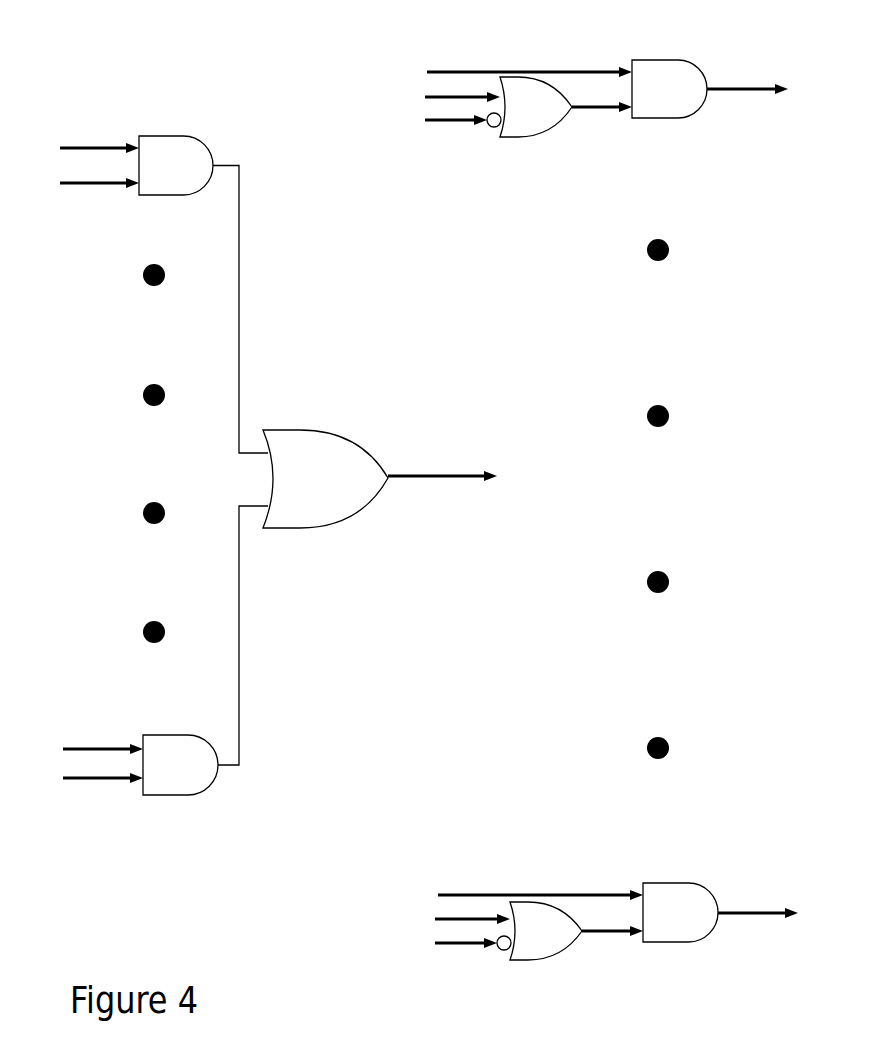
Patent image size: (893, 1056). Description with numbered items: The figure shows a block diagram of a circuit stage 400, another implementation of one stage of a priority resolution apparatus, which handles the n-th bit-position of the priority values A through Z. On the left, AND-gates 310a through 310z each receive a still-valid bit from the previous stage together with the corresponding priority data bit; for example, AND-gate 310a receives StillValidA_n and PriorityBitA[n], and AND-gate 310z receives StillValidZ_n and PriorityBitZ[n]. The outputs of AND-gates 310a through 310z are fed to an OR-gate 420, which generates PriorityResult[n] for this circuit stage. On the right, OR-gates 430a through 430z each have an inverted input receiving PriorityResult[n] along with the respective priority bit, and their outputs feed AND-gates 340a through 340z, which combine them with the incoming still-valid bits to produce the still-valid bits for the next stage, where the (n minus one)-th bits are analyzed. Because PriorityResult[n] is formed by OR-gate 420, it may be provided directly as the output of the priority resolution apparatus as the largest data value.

The circuit stage 400 is at (613, 22).
The AND-gate 310a is at (167, 135).
The AND-gate 310z is at (170, 797).
The OR-gate 420 is at (287, 531).
The OR-gate 430a is at (530, 137).
The OR-gate 430z is at (553, 962).
The AND-gate 340a is at (698, 112).
The AND-gate 340z is at (690, 943).